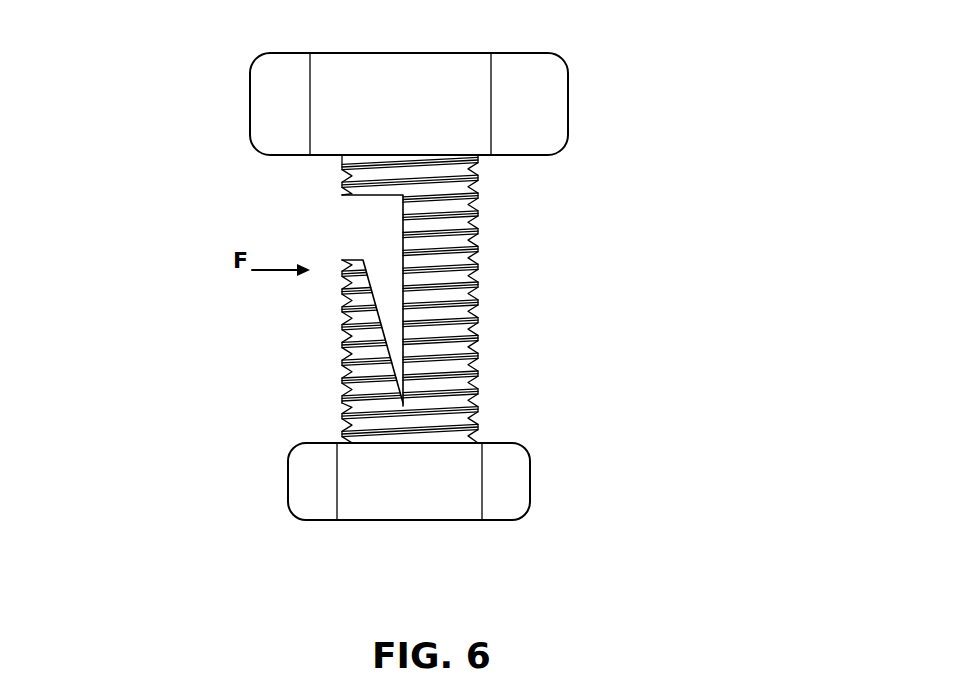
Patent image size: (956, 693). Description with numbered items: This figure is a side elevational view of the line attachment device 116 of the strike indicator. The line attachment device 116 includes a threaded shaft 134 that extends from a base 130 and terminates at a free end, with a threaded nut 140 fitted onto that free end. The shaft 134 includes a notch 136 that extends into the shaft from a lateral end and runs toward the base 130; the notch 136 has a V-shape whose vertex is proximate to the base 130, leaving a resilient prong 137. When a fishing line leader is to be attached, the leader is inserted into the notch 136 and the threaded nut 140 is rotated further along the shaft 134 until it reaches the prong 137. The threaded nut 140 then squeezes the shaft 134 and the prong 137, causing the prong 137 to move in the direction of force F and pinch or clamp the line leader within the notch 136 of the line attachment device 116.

The line attachment device 116 is at (112, 347).
The base 130 is at (520, 487).
The threaded shaft 134 is at (467, 306).
The notch 136 is at (377, 242).
The resilient prong 137 is at (343, 277).
The threaded nut 140 is at (542, 107).